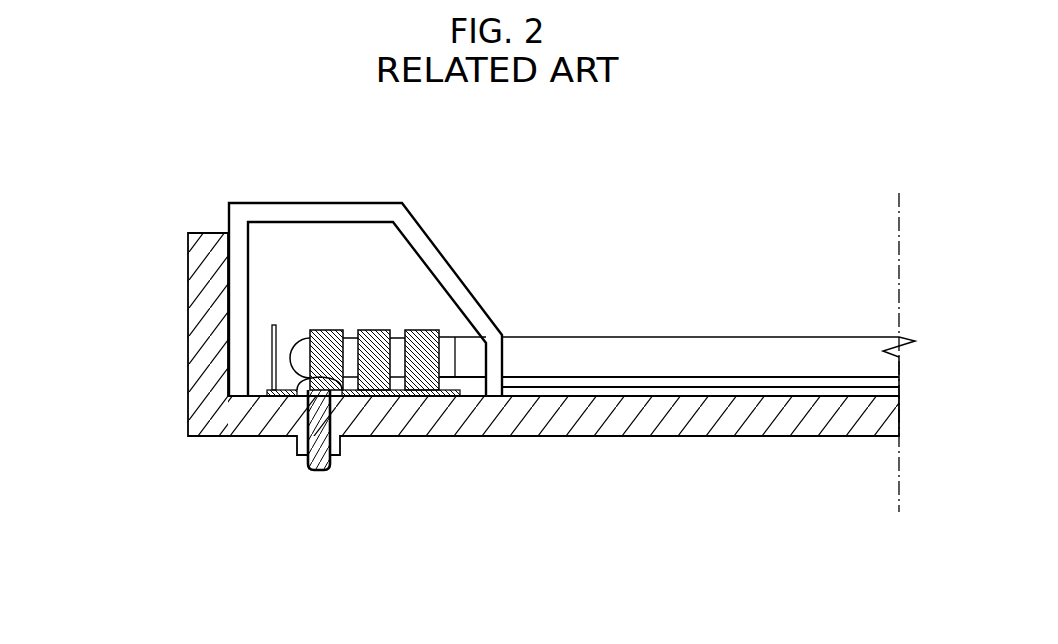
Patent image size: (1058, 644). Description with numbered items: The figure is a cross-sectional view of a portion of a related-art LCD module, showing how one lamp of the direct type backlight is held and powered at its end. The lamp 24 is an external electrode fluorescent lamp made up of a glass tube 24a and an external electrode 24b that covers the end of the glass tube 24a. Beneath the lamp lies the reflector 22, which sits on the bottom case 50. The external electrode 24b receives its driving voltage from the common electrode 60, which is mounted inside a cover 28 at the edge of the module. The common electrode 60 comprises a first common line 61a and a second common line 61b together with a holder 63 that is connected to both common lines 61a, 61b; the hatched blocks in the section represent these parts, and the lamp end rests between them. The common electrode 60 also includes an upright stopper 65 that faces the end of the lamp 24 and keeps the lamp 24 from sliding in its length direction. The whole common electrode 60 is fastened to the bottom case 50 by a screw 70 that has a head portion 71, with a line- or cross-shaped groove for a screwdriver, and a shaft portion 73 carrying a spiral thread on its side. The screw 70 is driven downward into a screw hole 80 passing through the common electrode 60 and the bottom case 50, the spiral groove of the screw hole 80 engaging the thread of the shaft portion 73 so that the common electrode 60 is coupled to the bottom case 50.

The reflector 22 is at (702, 388).
The lamp 24 is at (677, 303).
The glass tube 24a is at (580, 350).
The external electrode 24b is at (448, 347).
The cover 28 is at (313, 212).
The bottom case 50 is at (188, 283).
The common electrode 60 is at (356, 319).
The first common line 61a is at (283, 387).
The second common line 61b is at (404, 335).
The holder 63 is at (359, 329).
The stopper 65 is at (268, 358).
The screw 70 is at (369, 451).
The head portion 71 is at (350, 394).
The shaft portion 73 is at (323, 470).
The screw hole 80 is at (308, 459).